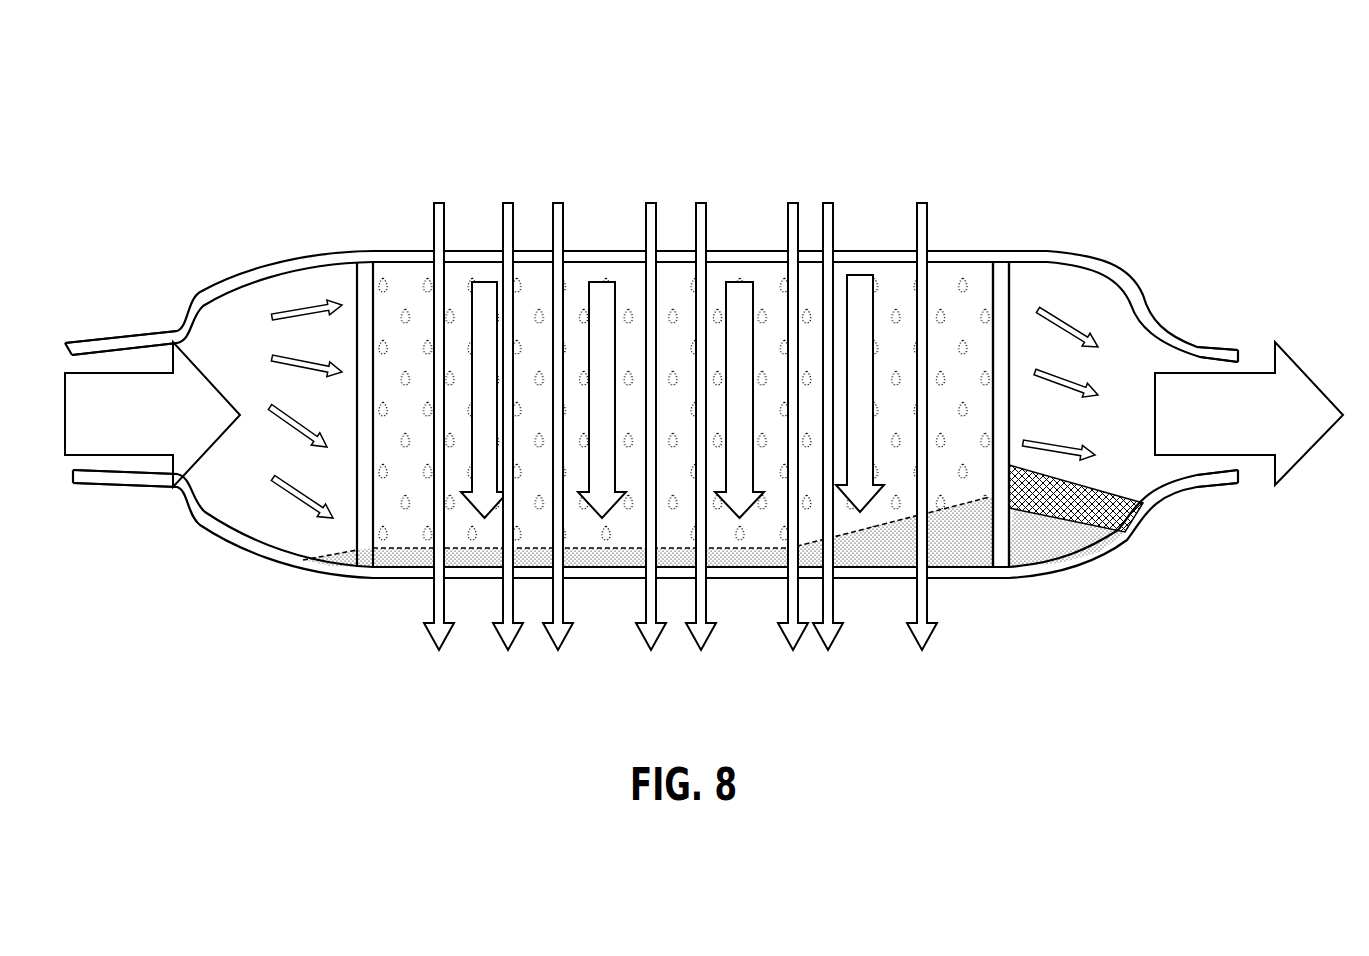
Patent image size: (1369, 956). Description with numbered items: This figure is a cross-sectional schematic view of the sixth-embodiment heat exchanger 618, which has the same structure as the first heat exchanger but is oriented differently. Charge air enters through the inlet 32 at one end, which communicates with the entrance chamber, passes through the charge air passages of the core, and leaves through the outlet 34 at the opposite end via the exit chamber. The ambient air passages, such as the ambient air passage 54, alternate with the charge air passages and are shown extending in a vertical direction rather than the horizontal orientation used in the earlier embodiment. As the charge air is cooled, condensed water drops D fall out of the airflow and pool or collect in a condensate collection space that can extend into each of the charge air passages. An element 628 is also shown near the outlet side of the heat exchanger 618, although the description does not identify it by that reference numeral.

The heat exchanger 618 is at (728, 157).
The inlet 32 is at (72, 341).
The outlet 34 is at (1238, 352).
The ambient air passage 54 is at (1017, 294).
The mesh screen 628 is at (1110, 488).
The condensed water drops D is at (958, 282).